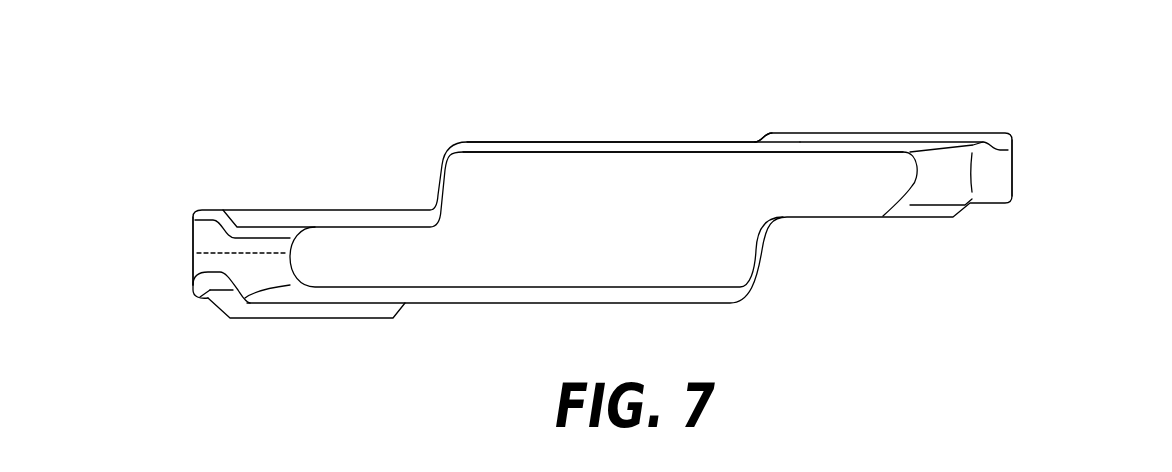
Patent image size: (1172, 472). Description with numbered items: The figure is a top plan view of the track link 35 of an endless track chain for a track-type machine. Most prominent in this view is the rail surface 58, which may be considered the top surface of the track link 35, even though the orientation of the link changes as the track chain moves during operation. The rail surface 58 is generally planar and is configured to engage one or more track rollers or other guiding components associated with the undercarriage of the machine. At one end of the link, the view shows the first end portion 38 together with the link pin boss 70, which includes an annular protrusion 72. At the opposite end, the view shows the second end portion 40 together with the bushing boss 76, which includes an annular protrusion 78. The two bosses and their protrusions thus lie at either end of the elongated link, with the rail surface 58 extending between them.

The track link 35 is at (485, 333).
The first end portion 38 is at (150, 283).
The second end portion 40 is at (1036, 223).
The rail surface 58 is at (638, 170).
The link pin boss 70 is at (378, 320).
The annular protrusion 72 is at (232, 308).
The bushing boss 76 is at (888, 133).
The annular protrusion 78 is at (762, 138).